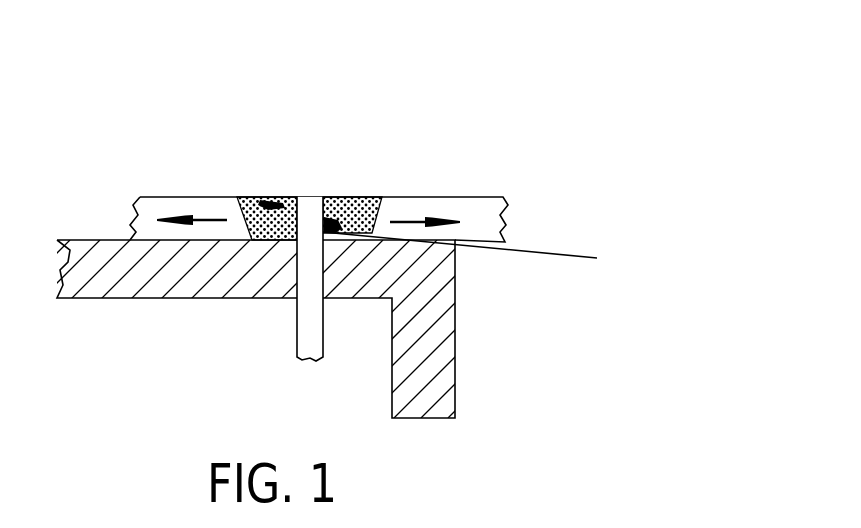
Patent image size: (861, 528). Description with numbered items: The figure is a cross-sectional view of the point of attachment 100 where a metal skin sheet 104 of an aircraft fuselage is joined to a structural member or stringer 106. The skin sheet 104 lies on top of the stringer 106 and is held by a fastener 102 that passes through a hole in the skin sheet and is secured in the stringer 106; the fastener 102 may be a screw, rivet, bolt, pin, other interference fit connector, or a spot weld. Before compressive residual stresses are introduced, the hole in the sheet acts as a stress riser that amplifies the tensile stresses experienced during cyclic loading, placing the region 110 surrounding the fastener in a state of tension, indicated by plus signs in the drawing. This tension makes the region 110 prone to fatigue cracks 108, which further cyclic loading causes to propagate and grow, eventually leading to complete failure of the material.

The point of attachment 100 is at (346, 218).
The fastener 102 is at (315, 210).
The skin sheet 104 is at (455, 210).
The stringer 106 is at (455, 357).
The fatigue cracks 108 is at (597, 258).
The region surrounding the fastener 110 is at (255, 205).